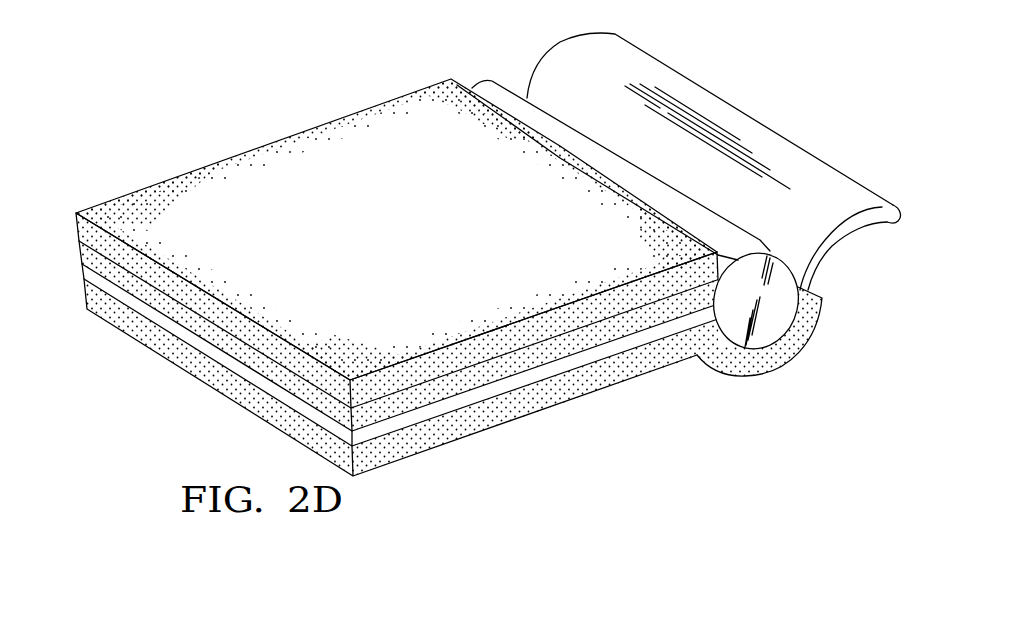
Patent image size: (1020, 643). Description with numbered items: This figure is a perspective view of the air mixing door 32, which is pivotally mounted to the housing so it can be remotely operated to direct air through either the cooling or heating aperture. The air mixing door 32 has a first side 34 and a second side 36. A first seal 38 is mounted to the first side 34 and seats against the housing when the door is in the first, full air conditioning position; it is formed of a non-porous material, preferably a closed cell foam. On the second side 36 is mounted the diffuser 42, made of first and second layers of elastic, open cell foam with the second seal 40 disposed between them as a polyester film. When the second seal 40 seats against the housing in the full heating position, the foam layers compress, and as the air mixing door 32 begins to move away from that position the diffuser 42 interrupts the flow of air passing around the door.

The air mixing door 32 is at (768, 118).
The first side 34 is at (505, 423).
The second side 36 is at (275, 167).
The first seal 38 is at (445, 428).
The second seal 40 is at (567, 333).
The diffuser 42 is at (528, 330).